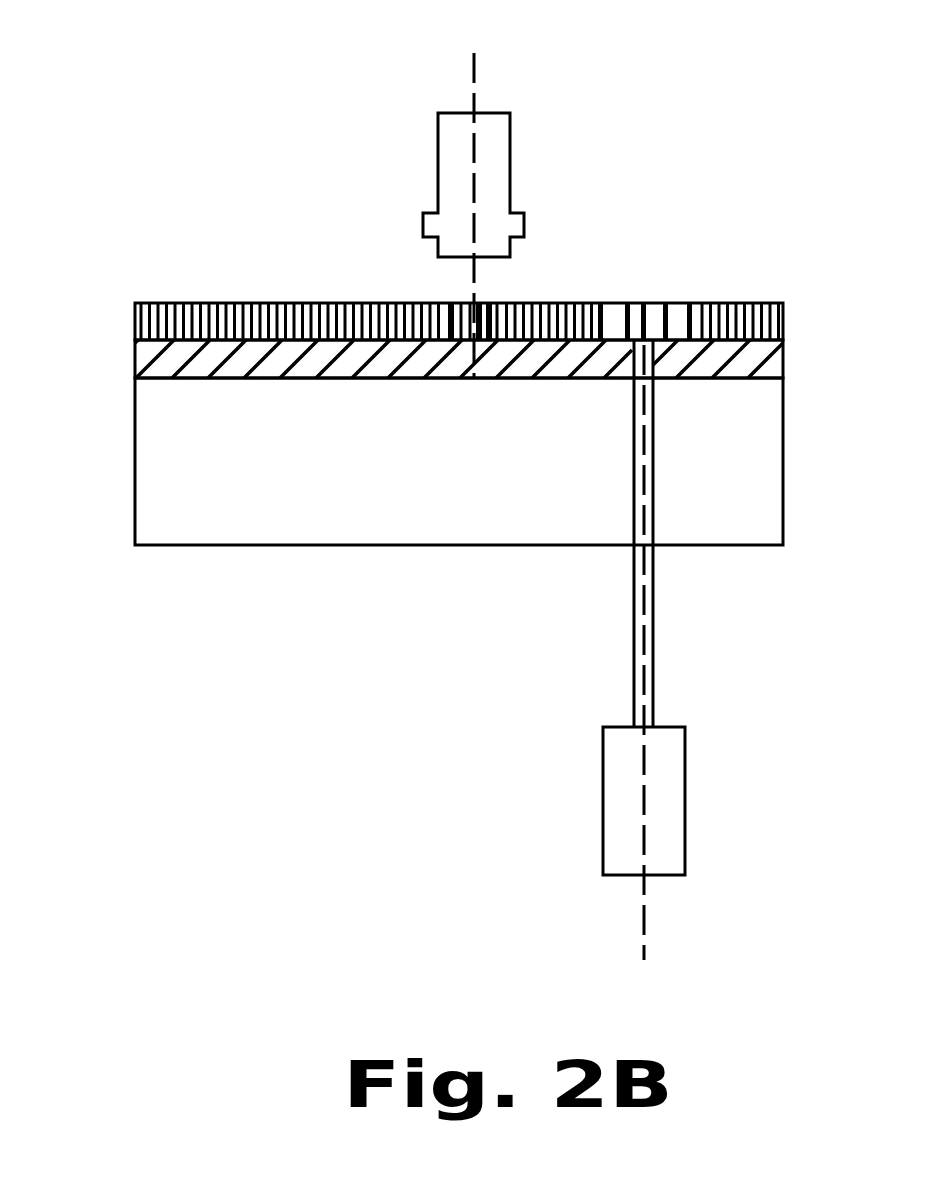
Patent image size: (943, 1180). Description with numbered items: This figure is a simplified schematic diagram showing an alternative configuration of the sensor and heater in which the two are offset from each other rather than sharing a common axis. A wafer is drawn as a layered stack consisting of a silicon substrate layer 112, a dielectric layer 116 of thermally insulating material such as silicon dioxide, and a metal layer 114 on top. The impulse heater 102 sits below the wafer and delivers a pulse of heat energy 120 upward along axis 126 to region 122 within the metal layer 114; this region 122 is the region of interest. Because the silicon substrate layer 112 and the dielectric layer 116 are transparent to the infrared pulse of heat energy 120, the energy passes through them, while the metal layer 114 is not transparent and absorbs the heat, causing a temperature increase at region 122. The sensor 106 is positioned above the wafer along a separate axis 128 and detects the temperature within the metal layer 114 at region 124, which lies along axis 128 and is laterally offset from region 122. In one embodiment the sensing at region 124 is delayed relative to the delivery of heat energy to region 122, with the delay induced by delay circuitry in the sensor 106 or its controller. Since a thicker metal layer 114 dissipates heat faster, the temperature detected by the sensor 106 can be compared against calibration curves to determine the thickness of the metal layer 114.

The impulse heater 102 is at (610, 877).
The sensor 106 is at (438, 120).
The silicon substrate layer 112 is at (135, 468).
The metal layer 114 is at (135, 320).
The dielectric layer 116 is at (135, 357).
The pulse of heat energy 120 is at (633, 668).
The region 122 is at (670, 313).
The region 124 is at (444, 303).
The axis 126 is at (644, 898).
The axis 128 is at (478, 79).